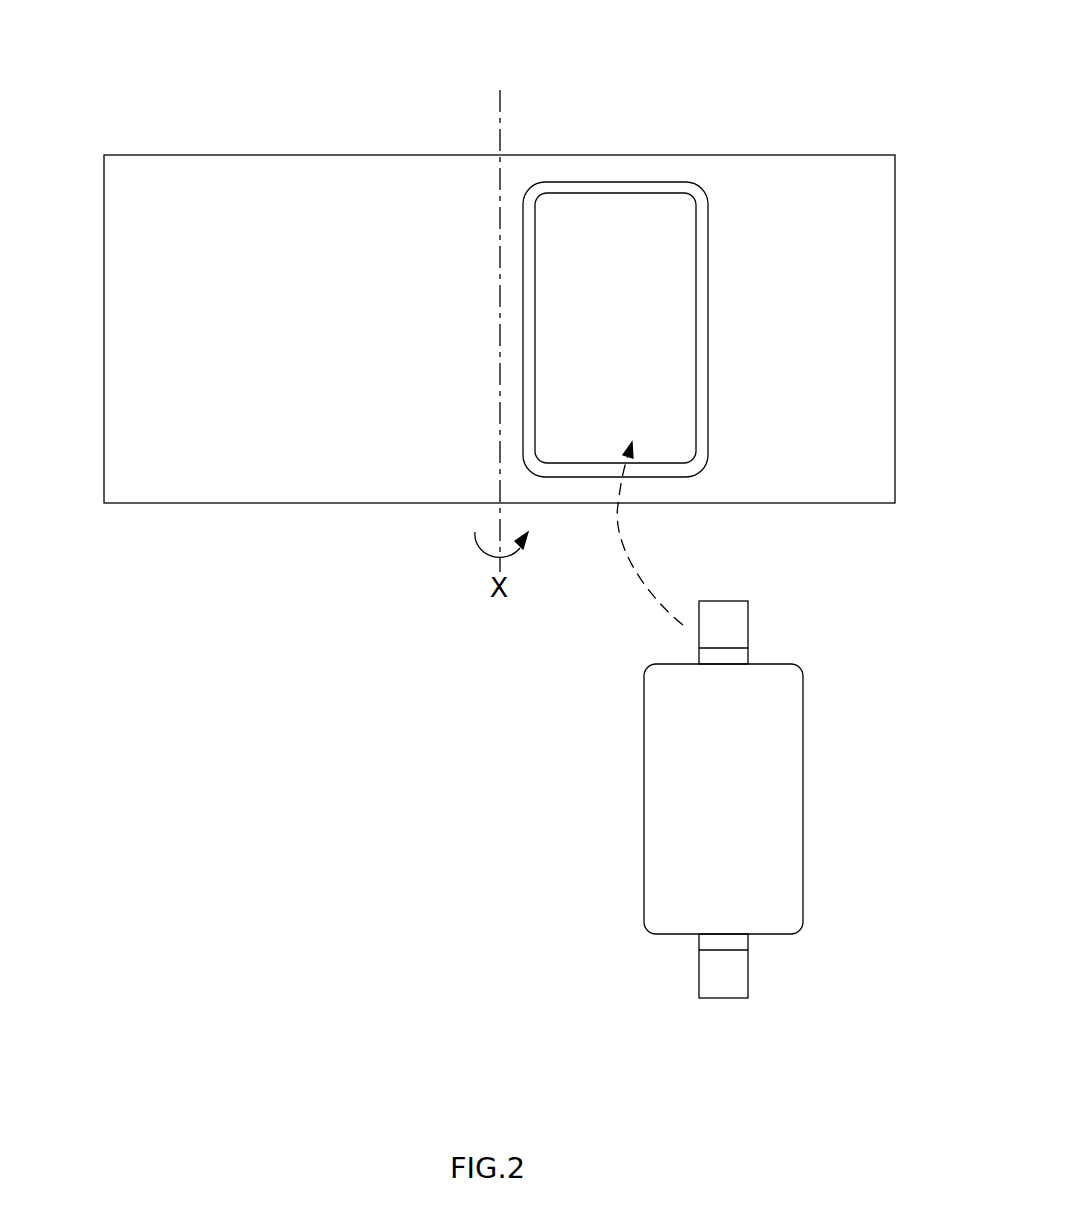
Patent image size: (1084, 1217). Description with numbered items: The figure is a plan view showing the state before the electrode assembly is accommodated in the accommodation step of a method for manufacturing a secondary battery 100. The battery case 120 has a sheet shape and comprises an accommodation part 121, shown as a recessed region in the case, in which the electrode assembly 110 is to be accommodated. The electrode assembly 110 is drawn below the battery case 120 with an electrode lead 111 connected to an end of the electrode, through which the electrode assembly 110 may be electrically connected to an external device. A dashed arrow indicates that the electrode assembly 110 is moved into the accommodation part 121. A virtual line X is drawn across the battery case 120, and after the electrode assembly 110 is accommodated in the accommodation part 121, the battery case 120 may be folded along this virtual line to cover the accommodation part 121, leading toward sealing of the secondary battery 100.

The secondary battery 100 is at (757, 40).
The electrode assembly 110 is at (808, 718).
The electrode lead 111 is at (725, 990).
The battery case 120 is at (864, 155).
The accommodation part 121 is at (623, 239).